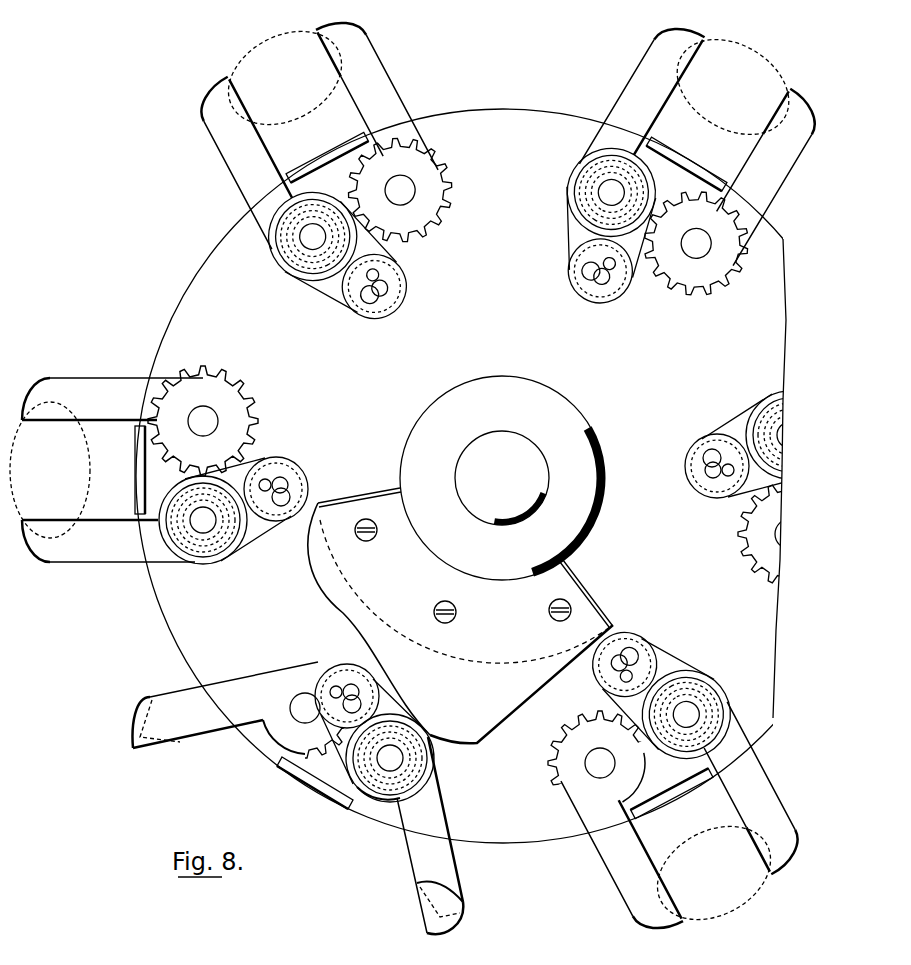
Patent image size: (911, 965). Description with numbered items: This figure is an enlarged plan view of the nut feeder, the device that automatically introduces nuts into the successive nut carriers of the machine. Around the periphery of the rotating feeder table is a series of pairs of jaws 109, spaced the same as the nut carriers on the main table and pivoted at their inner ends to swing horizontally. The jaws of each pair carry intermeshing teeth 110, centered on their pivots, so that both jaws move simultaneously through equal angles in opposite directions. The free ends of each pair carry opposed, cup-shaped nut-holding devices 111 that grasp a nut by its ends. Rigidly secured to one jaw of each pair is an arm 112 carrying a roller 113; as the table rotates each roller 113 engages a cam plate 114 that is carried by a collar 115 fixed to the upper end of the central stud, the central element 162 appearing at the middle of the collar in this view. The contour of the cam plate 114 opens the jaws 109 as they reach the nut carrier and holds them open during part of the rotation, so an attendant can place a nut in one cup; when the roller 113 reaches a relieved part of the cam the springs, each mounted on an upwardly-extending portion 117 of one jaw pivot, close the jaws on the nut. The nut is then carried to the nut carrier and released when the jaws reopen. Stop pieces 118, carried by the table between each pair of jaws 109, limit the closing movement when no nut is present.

The jaws 109 is at (196, 748).
The intermeshing teeth 110 is at (432, 238).
The nut-holding devices 111 is at (386, 45).
The arm 112 is at (322, 287).
The roller 113 is at (377, 319).
The cam plate 114 is at (460, 615).
The collar 115 is at (585, 502).
The upwardly-extending portion 117 is at (315, 237).
The stop pieces 118 is at (431, 475).
The shaft 162 is at (502, 478).